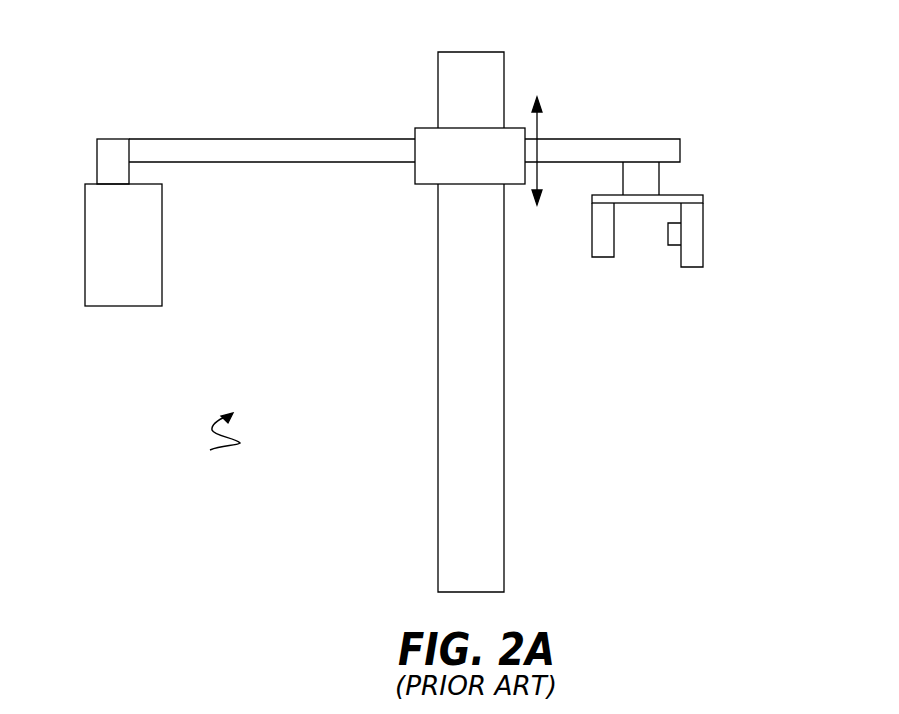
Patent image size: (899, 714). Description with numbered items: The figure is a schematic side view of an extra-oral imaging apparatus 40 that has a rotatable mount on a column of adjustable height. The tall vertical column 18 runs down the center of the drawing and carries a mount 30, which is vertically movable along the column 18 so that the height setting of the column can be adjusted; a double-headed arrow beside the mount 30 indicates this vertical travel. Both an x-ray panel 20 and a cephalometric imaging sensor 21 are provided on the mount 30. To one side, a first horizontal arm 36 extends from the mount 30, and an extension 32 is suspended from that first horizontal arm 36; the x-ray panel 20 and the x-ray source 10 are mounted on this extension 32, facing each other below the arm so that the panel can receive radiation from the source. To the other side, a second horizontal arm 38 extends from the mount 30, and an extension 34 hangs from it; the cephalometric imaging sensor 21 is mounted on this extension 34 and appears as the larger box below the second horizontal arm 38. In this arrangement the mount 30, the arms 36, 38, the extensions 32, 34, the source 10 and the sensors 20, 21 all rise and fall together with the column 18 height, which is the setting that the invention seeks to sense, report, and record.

The x-ray source 10 is at (703, 243).
The column 18 is at (453, 432).
The x-ray panel 20 is at (590, 245).
The cephalometric imaging sensor 21 is at (152, 258).
The mount 30 is at (428, 137).
The extension 32 is at (656, 182).
The extension 34 is at (102, 158).
The first horizontal arm 36 is at (660, 138).
The second horizontal arm 38 is at (202, 137).
The imaging apparatus 40 is at (211, 438).